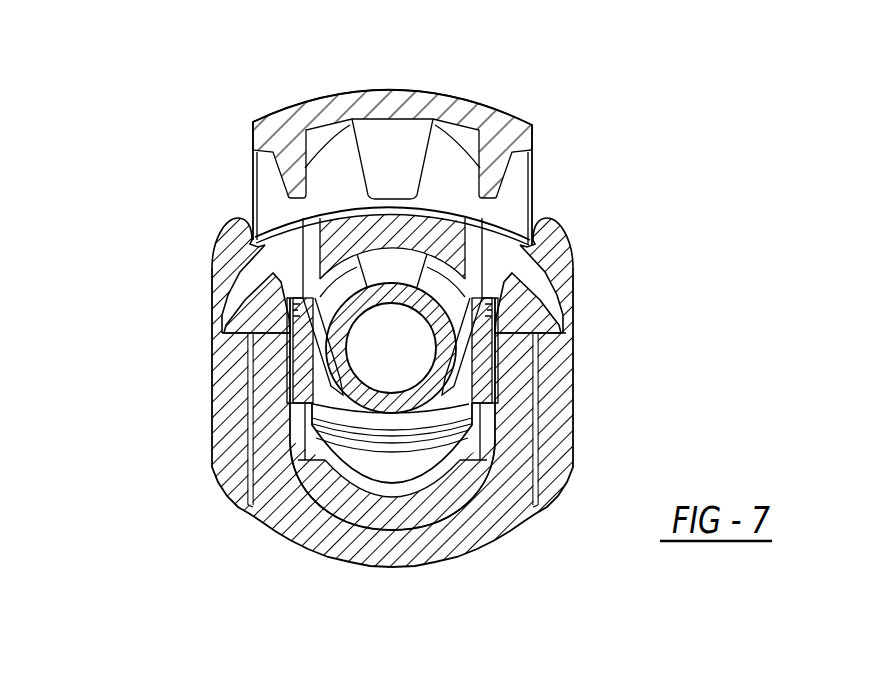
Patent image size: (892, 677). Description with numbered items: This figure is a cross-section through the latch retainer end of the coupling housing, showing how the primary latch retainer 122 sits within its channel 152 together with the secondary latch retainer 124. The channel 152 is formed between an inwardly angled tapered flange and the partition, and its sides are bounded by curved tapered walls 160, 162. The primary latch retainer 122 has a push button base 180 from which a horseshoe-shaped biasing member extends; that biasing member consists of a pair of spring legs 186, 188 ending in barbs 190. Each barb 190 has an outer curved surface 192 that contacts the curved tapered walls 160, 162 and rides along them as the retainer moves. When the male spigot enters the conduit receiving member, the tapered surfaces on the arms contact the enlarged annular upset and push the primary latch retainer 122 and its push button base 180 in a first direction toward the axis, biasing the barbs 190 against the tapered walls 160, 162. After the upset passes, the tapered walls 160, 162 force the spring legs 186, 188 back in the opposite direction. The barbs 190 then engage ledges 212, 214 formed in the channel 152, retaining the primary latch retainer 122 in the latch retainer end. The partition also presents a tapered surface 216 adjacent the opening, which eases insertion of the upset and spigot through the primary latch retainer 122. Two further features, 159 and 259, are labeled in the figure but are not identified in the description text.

The primary latch retainer 122 is at (432, 575).
The secondary latch retainer 124 is at (395, 77).
The channel 152 is at (213, 447).
The gap between housing and carrier 159 is at (527, 393).
The tapered wall 160 is at (240, 275).
The tapered wall 162 is at (528, 272).
The push button base 180 is at (473, 547).
The leg 186 is at (270, 393).
The leg 188 is at (520, 428).
The barbs 190 is at (247, 308).
The outer curved surface 192 is at (575, 292).
The ledge 212 is at (237, 333).
The ledge 214 is at (570, 334).
The tapered surface 216 is at (387, 468).
The cap recess 259 is at (407, 160).